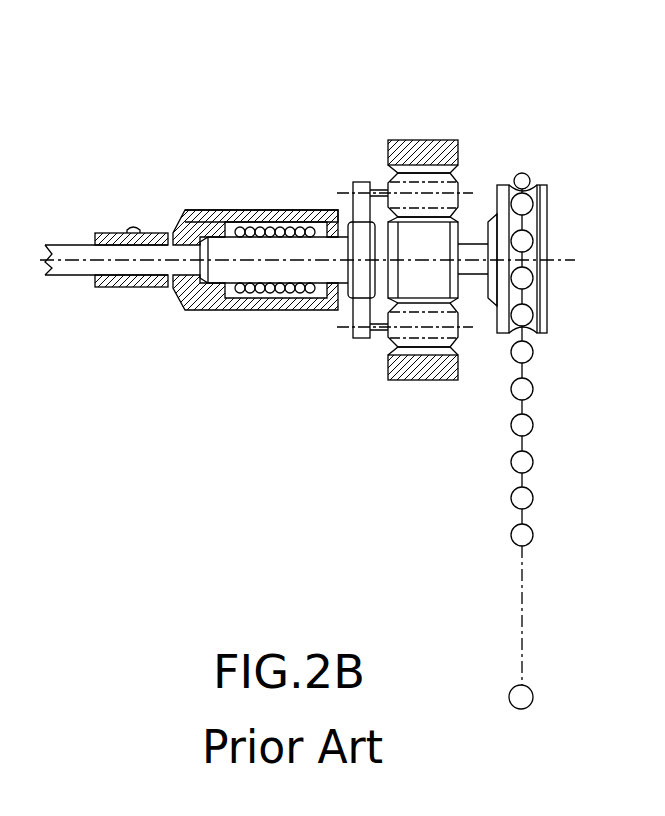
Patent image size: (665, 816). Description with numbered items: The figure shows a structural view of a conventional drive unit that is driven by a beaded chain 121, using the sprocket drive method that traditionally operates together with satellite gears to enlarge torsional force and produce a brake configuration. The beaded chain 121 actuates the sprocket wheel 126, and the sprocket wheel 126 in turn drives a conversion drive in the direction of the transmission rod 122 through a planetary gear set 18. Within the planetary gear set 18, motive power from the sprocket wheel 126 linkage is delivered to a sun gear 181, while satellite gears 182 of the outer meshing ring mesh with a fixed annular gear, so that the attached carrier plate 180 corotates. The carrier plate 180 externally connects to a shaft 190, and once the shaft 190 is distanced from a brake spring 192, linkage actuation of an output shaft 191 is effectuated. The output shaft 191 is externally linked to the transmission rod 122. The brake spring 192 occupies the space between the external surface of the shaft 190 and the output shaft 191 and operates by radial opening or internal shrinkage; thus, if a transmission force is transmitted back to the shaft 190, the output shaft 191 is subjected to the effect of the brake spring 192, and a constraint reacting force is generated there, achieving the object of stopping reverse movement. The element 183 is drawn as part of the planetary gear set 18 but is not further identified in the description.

The planetary gear set 18 is at (420, 254).
The beaded chain 121 is at (524, 426).
The transmission rod 122 is at (100, 252).
The sprocket wheel 126 is at (540, 217).
The carrier plate 180 is at (363, 305).
The sun gear 181 is at (440, 273).
The satellite gears 182 is at (432, 327).
The ratchet ring 183 is at (403, 365).
The shaft 190 is at (227, 268).
The output shaft 191 is at (204, 218).
The brake spring 192 is at (287, 289).